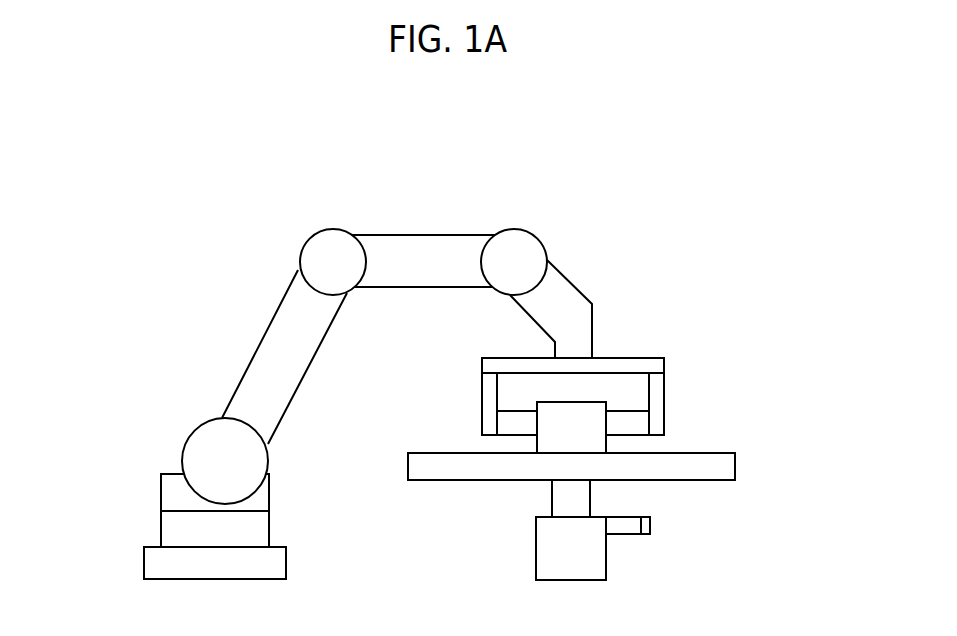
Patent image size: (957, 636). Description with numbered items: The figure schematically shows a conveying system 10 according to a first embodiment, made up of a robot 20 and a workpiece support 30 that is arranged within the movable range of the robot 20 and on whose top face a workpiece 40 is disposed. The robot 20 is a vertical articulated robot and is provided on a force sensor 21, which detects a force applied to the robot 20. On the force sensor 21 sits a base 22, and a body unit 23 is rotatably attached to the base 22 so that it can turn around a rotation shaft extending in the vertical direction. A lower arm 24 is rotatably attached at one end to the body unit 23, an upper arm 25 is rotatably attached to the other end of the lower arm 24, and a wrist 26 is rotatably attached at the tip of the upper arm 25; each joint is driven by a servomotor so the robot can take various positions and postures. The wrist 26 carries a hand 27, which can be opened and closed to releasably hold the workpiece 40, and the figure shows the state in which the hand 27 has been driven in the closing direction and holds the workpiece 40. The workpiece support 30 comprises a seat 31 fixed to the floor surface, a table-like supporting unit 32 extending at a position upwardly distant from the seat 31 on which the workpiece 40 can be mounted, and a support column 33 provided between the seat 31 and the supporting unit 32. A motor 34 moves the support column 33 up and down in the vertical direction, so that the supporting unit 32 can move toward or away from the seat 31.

The conveying system 10 is at (77, 126).
The robot 20 is at (193, 353).
The force sensor 21 is at (153, 545).
The base 22 is at (270, 528).
The body unit 23 is at (172, 473).
The lower arm 24 is at (262, 340).
The upper arm 25 is at (443, 232).
The wrist 26 is at (578, 285).
The hand 27 is at (668, 385).
The workpiece support 30 is at (713, 522).
The seat 31 is at (536, 550).
The supporting unit 32 is at (735, 463).
The support column 33 is at (590, 494).
The motor 34 is at (655, 527).
The workpiece 40 is at (607, 444).